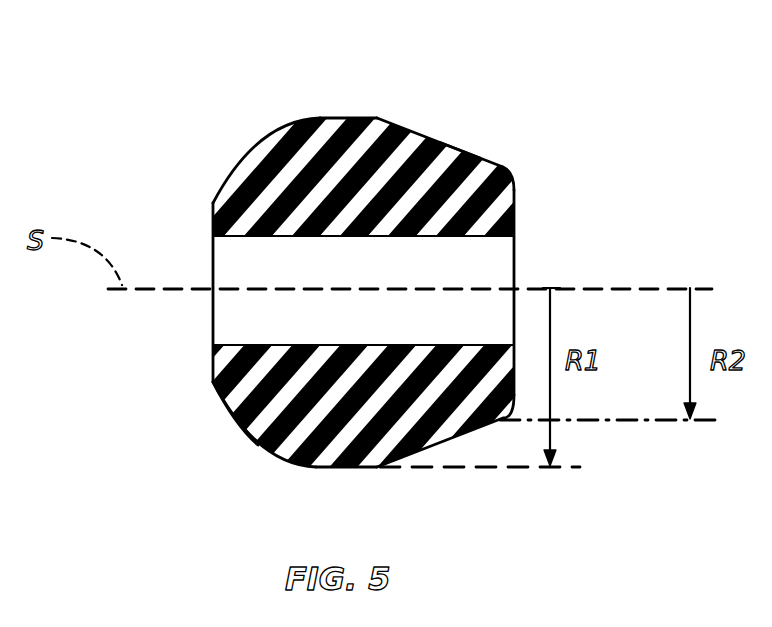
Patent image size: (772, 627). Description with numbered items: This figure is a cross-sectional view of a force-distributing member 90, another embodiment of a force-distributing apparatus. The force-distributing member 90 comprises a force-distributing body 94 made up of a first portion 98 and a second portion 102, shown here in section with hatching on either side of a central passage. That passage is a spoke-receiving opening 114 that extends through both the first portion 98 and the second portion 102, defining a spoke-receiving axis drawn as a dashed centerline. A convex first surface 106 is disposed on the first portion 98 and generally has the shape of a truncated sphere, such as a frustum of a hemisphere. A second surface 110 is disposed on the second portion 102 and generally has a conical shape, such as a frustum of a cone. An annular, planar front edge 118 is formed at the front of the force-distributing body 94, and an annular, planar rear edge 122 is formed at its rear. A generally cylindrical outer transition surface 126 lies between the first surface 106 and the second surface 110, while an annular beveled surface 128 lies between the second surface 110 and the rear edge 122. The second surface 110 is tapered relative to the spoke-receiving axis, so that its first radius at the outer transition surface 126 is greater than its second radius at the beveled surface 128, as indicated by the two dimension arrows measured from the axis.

The force-distributing member 90 is at (221, 50).
The force-distributing body 94 is at (325, 110).
The first portion 98 is at (252, 448).
The second portion 102 is at (421, 122).
The first surface 106 is at (228, 405).
The second surface 110 is at (457, 147).
The spoke-receiving opening 114 is at (230, 322).
The front edge 118 is at (212, 232).
The rear edge 122 is at (516, 203).
The outer transition surface 126 is at (348, 470).
The beveled surface 128 is at (503, 173).